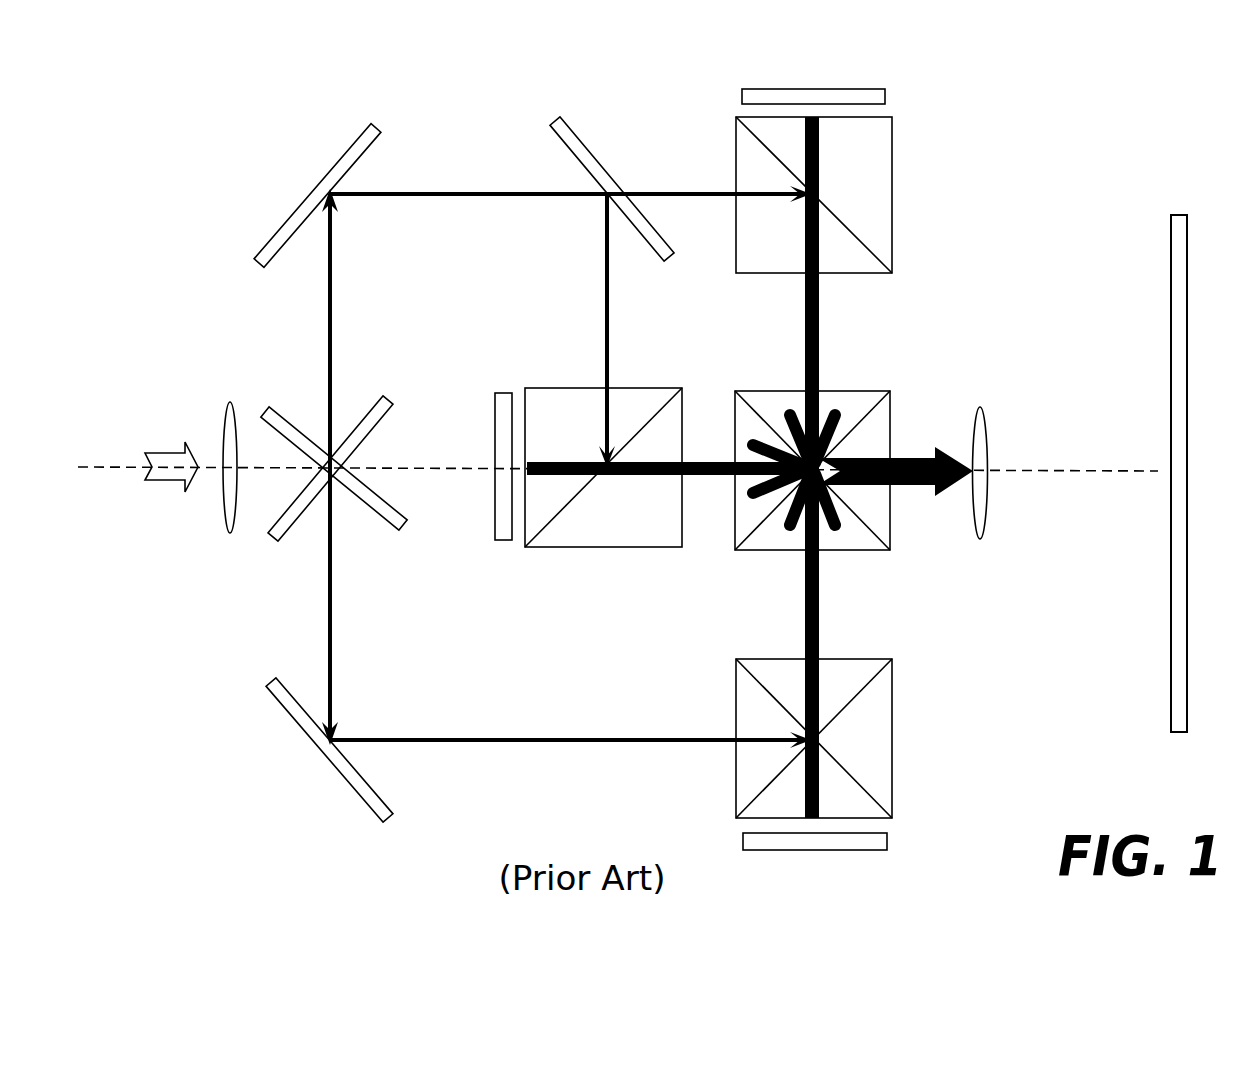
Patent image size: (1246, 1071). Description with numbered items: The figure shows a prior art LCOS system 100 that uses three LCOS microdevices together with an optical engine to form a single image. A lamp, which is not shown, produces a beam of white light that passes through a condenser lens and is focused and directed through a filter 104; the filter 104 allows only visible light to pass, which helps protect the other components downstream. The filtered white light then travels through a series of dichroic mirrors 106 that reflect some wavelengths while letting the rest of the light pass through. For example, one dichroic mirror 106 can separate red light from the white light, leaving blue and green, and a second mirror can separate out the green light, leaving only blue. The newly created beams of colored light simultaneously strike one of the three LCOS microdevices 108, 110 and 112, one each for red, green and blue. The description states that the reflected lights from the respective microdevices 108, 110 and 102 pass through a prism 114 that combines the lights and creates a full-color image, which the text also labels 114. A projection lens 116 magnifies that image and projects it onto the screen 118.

The LCOS system 100 is at (1084, 33).
The LCOS microdevice 102 is at (164, 456).
The filter 104 is at (231, 449).
The dichroic mirrors 106 is at (334, 450).
The LCOS microdevice 108 is at (813, 80).
The LCOS microdevice 110 is at (481, 466).
The LCOS microdevice 112 is at (815, 860).
The prism 114 is at (895, 458).
The projection lens 116 is at (1005, 473).
The screen 118 is at (1156, 473).